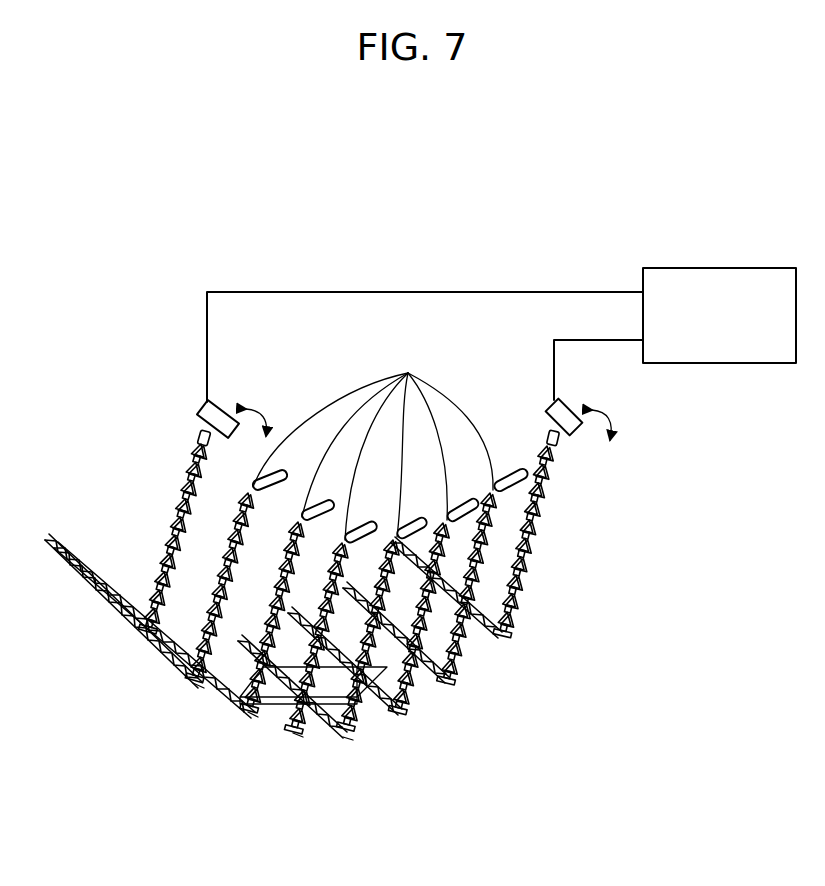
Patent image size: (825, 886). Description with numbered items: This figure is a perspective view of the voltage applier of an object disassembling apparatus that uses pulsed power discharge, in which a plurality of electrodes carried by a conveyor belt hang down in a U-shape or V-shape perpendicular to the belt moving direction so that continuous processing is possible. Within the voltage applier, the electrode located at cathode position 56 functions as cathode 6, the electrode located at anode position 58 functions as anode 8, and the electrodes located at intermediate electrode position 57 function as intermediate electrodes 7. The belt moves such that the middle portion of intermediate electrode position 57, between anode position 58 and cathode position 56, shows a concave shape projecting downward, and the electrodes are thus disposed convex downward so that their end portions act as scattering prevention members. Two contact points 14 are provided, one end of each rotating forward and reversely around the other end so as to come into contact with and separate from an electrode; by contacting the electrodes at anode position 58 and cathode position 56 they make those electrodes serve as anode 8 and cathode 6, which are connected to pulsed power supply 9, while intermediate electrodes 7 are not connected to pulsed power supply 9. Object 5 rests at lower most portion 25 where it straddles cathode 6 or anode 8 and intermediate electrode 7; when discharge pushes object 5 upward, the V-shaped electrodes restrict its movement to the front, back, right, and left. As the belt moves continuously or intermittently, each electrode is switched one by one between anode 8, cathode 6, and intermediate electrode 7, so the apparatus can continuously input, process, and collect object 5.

The object 5 is at (333, 682).
The cathode 6 is at (172, 527).
The intermediate electrode 7 is at (357, 538).
The anode 8 is at (545, 532).
The pulsed power supply 9 is at (706, 268).
The contact point 14 is at (228, 400).
The lower most portion 25 is at (320, 746).
The cathode position 56 is at (136, 654).
The intermediate electrode position 57 is at (198, 702).
The anode position 58 is at (498, 660).